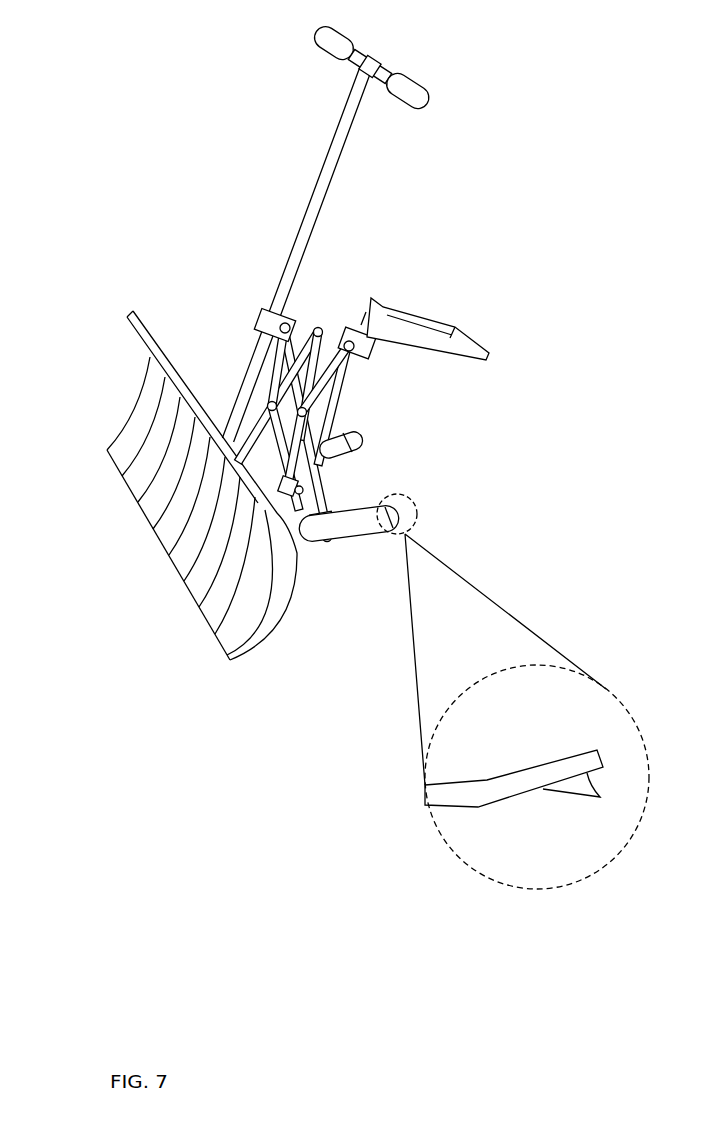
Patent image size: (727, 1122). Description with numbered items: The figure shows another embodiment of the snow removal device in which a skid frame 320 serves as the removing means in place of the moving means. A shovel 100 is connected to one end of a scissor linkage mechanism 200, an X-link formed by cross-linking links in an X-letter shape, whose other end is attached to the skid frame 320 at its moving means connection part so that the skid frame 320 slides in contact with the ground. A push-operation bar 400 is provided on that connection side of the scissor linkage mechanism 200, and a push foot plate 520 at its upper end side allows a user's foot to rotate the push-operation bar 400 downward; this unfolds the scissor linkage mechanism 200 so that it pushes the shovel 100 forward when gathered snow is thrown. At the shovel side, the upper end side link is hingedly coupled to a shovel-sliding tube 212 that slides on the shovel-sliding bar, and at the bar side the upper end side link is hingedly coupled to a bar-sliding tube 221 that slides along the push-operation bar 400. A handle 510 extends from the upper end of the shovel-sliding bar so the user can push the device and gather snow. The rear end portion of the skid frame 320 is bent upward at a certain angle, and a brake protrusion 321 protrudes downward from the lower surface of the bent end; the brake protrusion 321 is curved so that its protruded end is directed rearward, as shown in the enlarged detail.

The shovel 100 is at (148, 543).
The scissor linkage mechanism 200 is at (317, 311).
The shovel-sliding tube 212 is at (259, 324).
The bar-sliding tube 221 is at (368, 352).
The skid frame 320 is at (356, 538).
The brake protrusion 321 is at (590, 798).
The push-operation bar 400 is at (341, 421).
The handle 510 is at (410, 60).
The push foot plate 520 is at (486, 336).